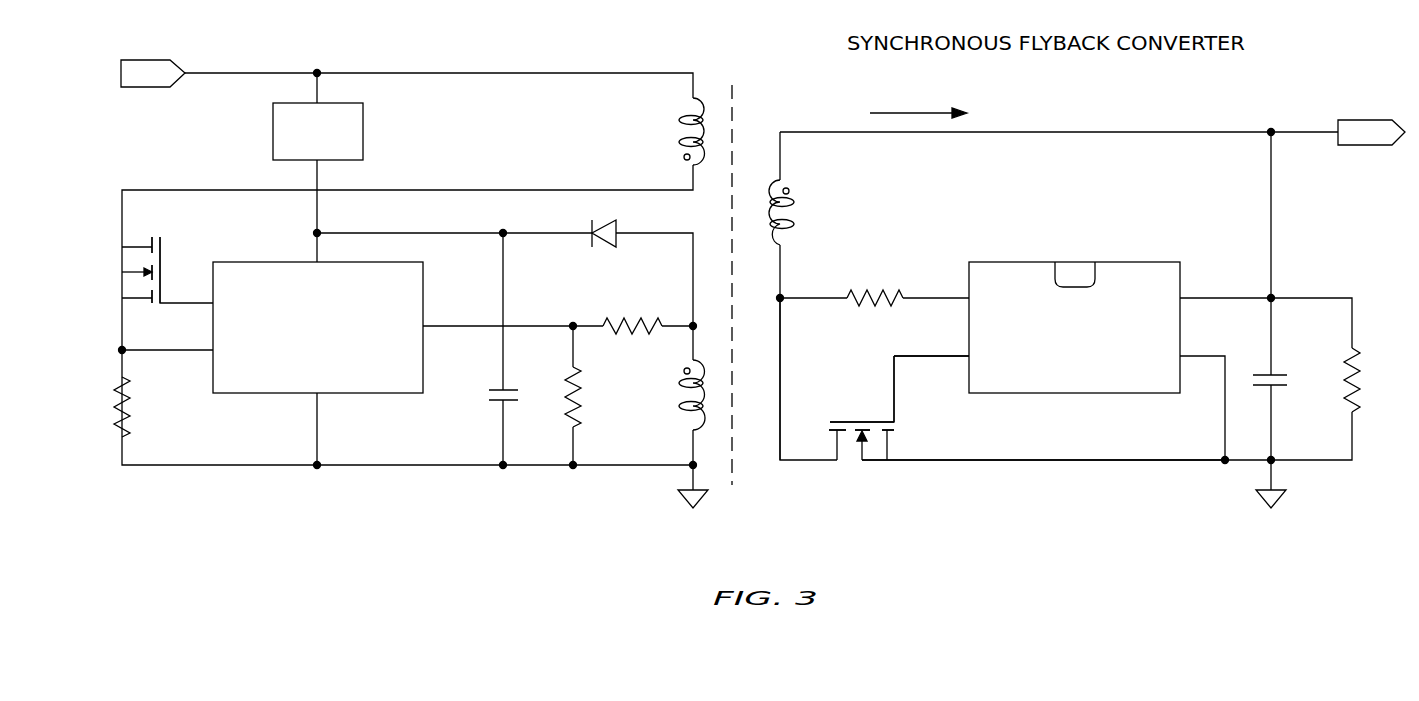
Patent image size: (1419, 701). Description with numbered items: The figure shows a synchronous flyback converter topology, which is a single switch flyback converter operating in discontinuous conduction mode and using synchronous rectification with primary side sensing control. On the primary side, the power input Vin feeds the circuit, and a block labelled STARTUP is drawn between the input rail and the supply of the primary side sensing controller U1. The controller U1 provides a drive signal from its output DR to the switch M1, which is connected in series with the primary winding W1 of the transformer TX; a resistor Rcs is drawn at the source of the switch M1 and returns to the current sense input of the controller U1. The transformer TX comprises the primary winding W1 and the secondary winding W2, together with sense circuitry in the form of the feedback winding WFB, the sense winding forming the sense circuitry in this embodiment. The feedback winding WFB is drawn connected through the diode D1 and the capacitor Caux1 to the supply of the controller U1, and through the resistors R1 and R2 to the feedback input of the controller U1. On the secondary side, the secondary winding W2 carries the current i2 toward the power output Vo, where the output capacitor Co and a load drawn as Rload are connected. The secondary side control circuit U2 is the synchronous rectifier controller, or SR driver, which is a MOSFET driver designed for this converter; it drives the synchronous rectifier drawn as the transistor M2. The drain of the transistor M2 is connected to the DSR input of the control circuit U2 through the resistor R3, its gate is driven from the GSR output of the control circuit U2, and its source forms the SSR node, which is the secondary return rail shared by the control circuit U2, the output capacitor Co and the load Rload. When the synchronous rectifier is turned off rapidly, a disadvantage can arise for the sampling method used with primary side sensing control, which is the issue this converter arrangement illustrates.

The power input Vin is at (153, 73).
The start-up circuit STARTUP is at (318, 131).
The switch M1 is at (126, 270).
The primary side sensing controller U1 is at (318, 314).
The current sense resistor Rcs is at (102, 407).
The auxiliary supply capacitor Caux1 is at (476, 396).
The feedback divider resistor R1 is at (588, 397).
The feedback divider resistor R2 is at (632, 311).
The auxiliary rectifier diode D1 is at (604, 220).
The primary winding W1 is at (671, 130).
The feedback winding WFB is at (669, 395).
The transformer TX is at (732, 269).
The secondary winding W2 is at (791, 202).
The secondary current i2 is at (918, 99).
The drain sense resistor R3 is at (875, 283).
The secondary side control circuit U2 is at (1074, 314).
The synchronous rectifier transistor M2 is at (861, 410).
The synchronous rectifier drain node DSR is at (768, 379).
The synchronous rectifier gate node GSR is at (931, 376).
The synchronous rectifier source node SSR is at (1043, 447).
The output capacitor Co is at (1285, 380).
The load resistor Rload is at (1381, 380).
The power output Vo is at (1371, 132).